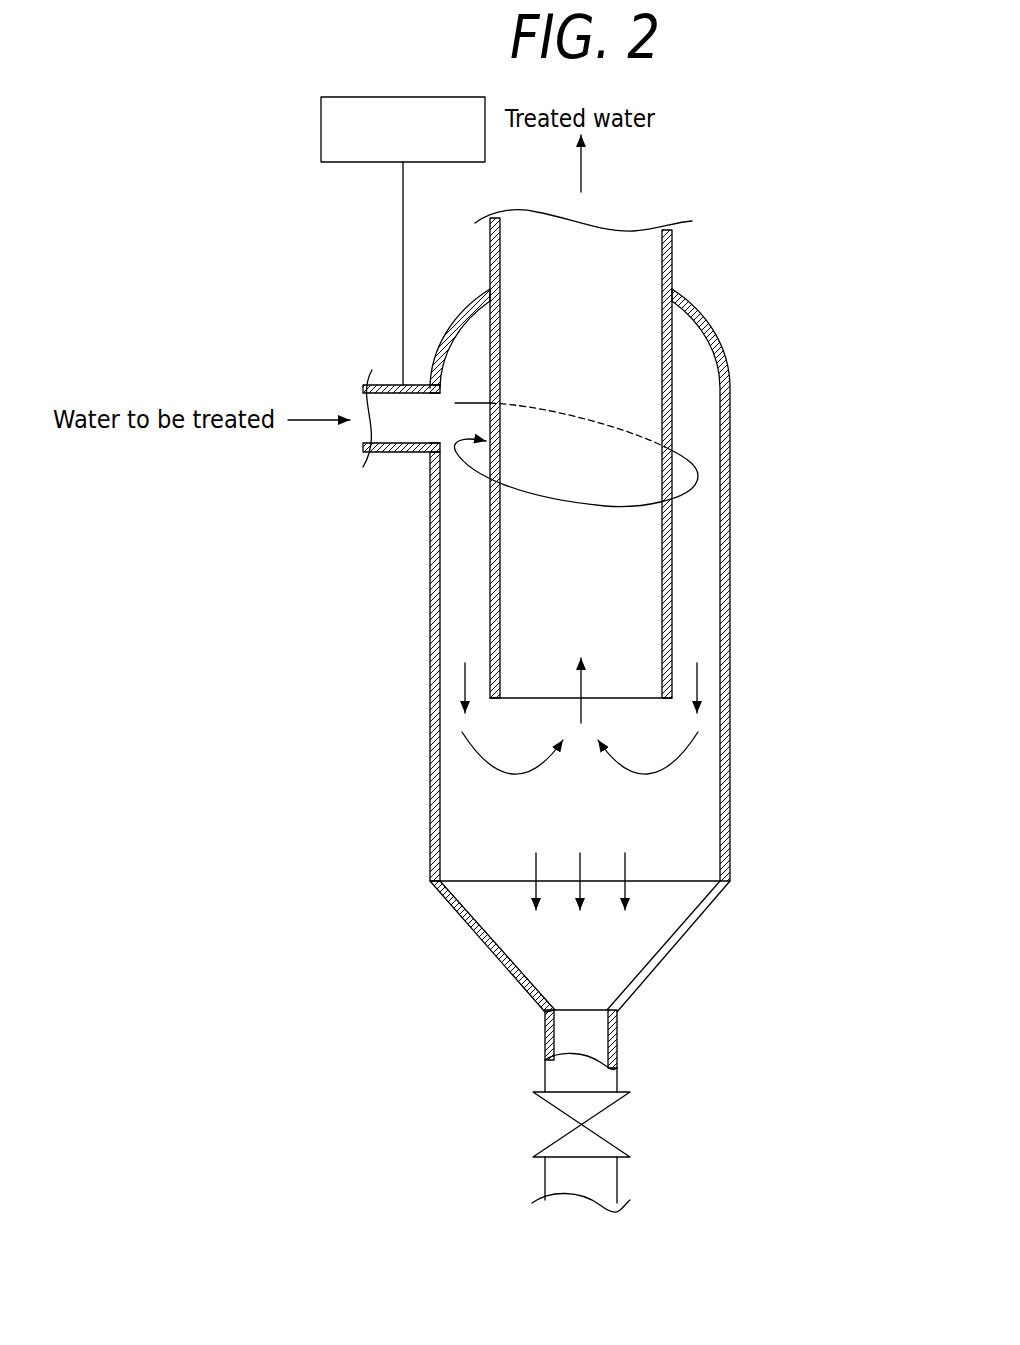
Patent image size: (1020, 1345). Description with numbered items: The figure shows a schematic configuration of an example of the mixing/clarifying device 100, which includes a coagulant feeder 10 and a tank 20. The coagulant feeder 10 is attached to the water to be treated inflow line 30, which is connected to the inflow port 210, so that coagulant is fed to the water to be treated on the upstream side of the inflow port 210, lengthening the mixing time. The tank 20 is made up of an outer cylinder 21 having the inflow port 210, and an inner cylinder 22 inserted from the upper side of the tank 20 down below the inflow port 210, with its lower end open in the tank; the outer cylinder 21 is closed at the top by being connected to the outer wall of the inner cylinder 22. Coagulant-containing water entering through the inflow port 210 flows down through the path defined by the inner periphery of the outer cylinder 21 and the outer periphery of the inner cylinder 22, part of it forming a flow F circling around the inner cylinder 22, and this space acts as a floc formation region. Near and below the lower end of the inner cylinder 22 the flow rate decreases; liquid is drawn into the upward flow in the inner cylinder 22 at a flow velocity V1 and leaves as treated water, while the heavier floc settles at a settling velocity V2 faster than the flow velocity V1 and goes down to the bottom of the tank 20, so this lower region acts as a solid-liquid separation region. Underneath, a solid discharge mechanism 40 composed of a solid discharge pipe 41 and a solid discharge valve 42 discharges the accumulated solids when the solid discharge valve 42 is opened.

The mixing/clarifying device 100 is at (777, 217).
The coagulant feeder 10 is at (418, 140).
The tank 20 is at (826, 483).
The outer cylinder 21 is at (730, 572).
The inner cylinder 22 is at (672, 530).
The water to be treated inflow line 30 is at (387, 385).
The inflow port 210 is at (440, 423).
The solid discharge mechanism 40 is at (438, 1035).
The solid discharge pipe 41 is at (545, 1046).
The solid discharge valve 42 is at (558, 1135).
The flow F is at (686, 470).
The flow velocity V1 is at (582, 682).
The settling velocity V2 is at (535, 870).